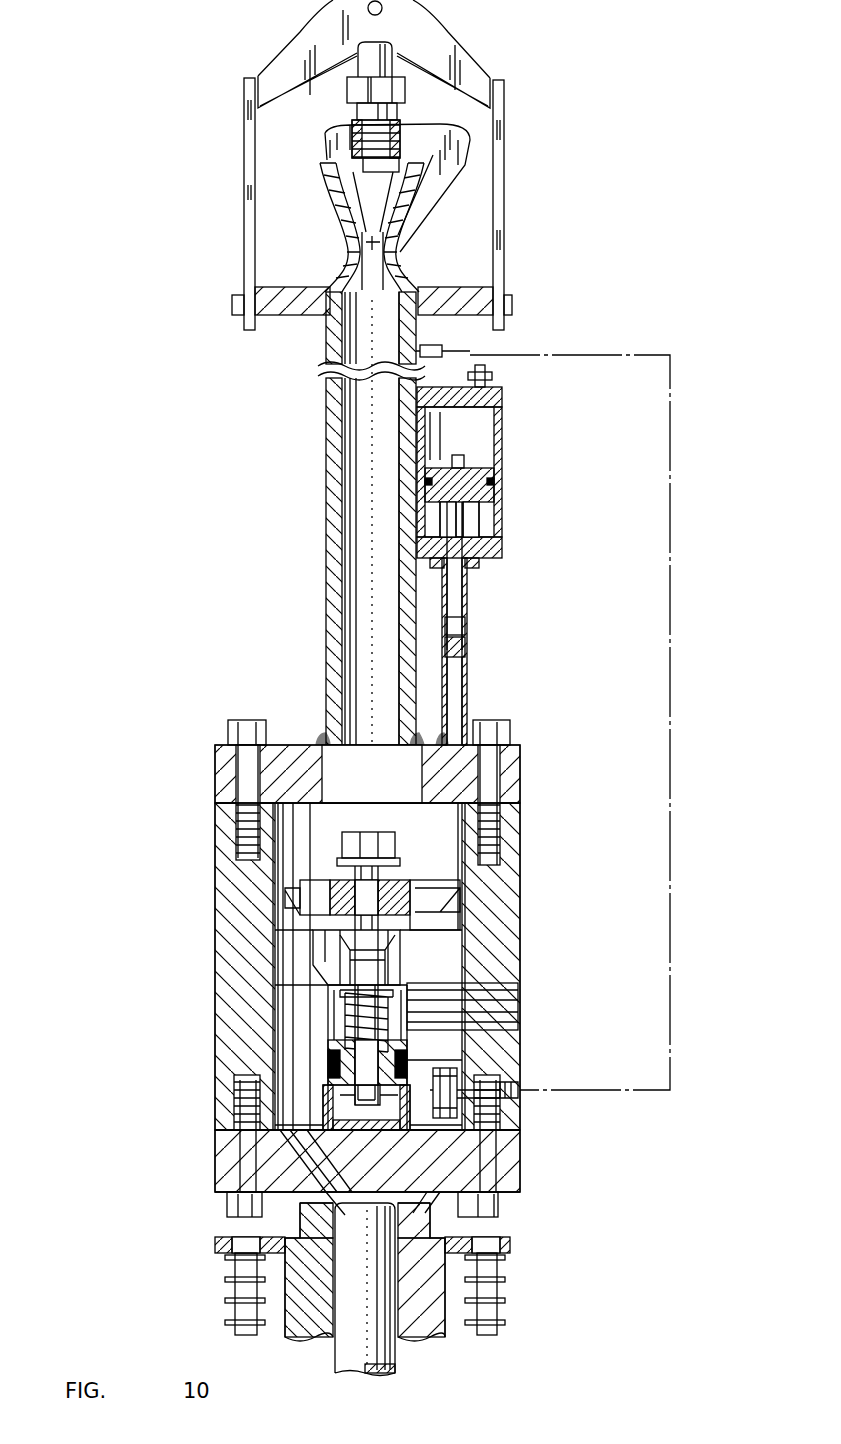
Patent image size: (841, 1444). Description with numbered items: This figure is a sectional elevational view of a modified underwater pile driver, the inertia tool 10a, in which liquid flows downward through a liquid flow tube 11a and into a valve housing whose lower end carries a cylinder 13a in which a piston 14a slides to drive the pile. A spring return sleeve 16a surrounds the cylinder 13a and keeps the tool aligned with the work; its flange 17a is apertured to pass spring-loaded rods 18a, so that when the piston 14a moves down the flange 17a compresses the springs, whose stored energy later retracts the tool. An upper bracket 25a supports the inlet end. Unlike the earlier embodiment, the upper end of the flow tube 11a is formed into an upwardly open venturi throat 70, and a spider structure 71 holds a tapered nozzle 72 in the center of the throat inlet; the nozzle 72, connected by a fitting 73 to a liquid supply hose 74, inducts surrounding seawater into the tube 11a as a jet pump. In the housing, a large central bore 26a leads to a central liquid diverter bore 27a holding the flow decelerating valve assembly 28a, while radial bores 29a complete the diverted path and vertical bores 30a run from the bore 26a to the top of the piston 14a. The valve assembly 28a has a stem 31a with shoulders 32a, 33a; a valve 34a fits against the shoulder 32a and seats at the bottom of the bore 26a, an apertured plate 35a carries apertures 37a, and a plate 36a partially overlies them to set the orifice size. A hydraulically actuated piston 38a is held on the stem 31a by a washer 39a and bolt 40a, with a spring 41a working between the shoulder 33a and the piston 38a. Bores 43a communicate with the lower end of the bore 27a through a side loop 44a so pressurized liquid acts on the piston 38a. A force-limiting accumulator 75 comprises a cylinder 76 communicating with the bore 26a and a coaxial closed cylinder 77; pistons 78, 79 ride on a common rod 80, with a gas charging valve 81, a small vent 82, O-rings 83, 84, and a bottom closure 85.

The inertia tool 10a is at (200, 820).
The liquid flow tube 11a is at (326, 515).
The cylinder 13a is at (300, 1233).
The piston 14a is at (396, 1355).
The spring return sleeve 16a is at (288, 1330).
The flange 17a is at (510, 1245).
The spring-loaded rods 18a is at (503, 1268).
The bracket 25a is at (482, 72).
The central bore 26a is at (437, 828).
The central liquid diverter bore 27a is at (275, 1045).
The flow decelerating valve assembly 28a is at (410, 975).
The radial bores 29a is at (522, 1008).
The vertical bores 30a is at (330, 965).
The stem 31a is at (388, 1020).
The shoulder 32a is at (380, 958).
The shoulder 33a is at (340, 1010).
The valve 34a is at (320, 938).
The apertured plate 35a is at (462, 900).
The plate 36a is at (444, 881).
The apertures 37a is at (285, 898).
The hydraulically actuated piston 38a is at (335, 1100).
The washer 39a is at (490, 1160).
The bolt 40a is at (455, 1125).
The spring 41a is at (407, 1065).
The bores 43a is at (468, 1096).
The side loop 44a is at (637, 352).
The venturi throat 70 is at (375, 243).
The spider structure 71 is at (415, 208).
The tapered nozzle 72 is at (362, 204).
The fitting 73 is at (346, 90).
The liquid supply hose 74 is at (358, 50).
The accumulator 75 is at (503, 427).
The cylinder 76 is at (468, 681).
The closed cylinder 77 is at (504, 397).
The piston 78 is at (466, 650).
The piston 79 is at (500, 492).
The rod 80 is at (462, 586).
The gas charging valve 81 is at (490, 378).
The vent 82 is at (480, 568).
The O-ring 83 is at (466, 636).
The O-ring 84 is at (503, 484).
The bottom plate 85 is at (503, 534).